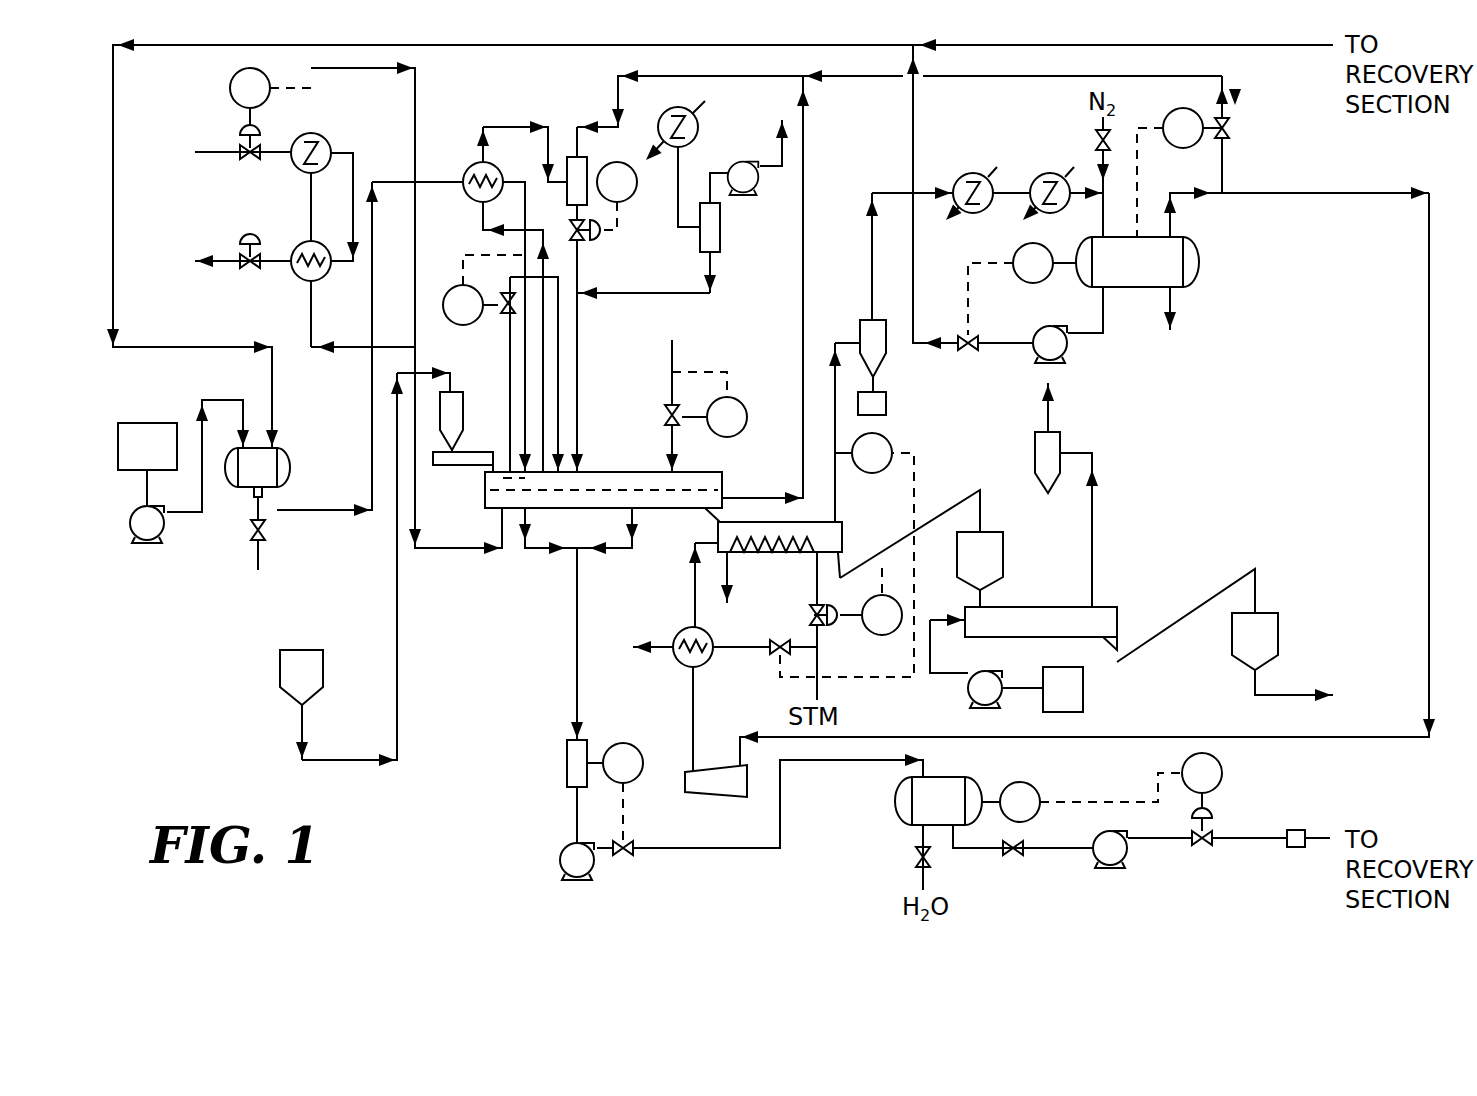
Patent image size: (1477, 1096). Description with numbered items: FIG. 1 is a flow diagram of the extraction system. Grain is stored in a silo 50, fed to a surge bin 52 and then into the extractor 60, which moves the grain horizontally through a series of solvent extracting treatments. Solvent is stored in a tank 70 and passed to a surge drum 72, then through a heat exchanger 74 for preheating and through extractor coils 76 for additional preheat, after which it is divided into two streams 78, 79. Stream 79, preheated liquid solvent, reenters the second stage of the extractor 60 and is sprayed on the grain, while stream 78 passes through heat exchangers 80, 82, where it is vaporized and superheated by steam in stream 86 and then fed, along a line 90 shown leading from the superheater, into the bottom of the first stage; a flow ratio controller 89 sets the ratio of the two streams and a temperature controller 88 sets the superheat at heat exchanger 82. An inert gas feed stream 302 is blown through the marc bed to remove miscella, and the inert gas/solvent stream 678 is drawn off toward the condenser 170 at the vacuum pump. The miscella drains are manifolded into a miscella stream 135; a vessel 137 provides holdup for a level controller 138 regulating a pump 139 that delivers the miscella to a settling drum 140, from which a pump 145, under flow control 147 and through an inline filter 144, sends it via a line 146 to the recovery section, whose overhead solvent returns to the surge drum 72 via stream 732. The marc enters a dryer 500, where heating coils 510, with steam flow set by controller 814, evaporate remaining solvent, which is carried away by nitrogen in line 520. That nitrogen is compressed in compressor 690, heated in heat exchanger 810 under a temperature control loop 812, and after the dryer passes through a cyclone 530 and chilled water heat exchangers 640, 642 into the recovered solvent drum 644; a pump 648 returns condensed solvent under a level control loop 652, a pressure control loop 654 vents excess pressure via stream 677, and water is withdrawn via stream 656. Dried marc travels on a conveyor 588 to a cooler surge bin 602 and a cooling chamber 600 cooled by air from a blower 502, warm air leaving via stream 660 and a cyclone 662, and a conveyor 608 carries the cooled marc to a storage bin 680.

The silo 50 is at (280, 660).
The surge bin 52 is at (464, 412).
The extractor 60 is at (628, 472).
The tank 70 is at (147, 423).
The surge drum 72 is at (291, 467).
The heat exchanger 74 is at (470, 170).
The extractor coils 76 is at (512, 478).
The stream 78 is at (341, 352).
The stream 79 is at (560, 310).
The heat exchanger 80 is at (296, 276).
The heat exchanger 82 is at (296, 167).
The stream 86 is at (212, 152).
The temperature controller 88 is at (229, 88).
The flow ratio controller 89 is at (452, 287).
The vapor line 90 is at (415, 90).
The miscella stream 135 is at (576, 601).
The vessel 137 is at (567, 763).
The level controller 138 is at (622, 743).
The pump 139 is at (560, 859).
The settling drum 140 is at (895, 800).
The inline filter 144 is at (1293, 848).
The pump 145 is at (1095, 862).
The line to recovery section 146 is at (1265, 832).
The flow control 147 is at (1225, 762).
The condenser 170 is at (699, 127).
The feed stream 302 is at (672, 349).
The dryer 500 is at (843, 531).
The blower 502 is at (968, 685).
The heating coils 510 is at (771, 556).
The line 520 is at (835, 340).
The cyclone 530 is at (887, 362).
The conveyor 588 is at (953, 507).
The cooling chamber 600 is at (1058, 607).
The cooler surge bin 602 is at (1003, 533).
The conveyor 608 is at (1195, 609).
The chilled water heat exchanger 640 is at (970, 172).
The chilled water heat exchanger 642 is at (1050, 172).
The recovered solvent drum 644 is at (1200, 262).
The pump 648 is at (1065, 358).
The level control loop 652 is at (1018, 280).
The pressure control loop 654 is at (1168, 148).
The stream 656 is at (1175, 300).
The stream 660 is at (1093, 525).
The cyclone 662 is at (1062, 432).
The stream 677 is at (1228, 105).
The inert gas/solvent stream 678 is at (803, 328).
The storage bin 680 is at (1283, 630).
The compressor 690 is at (738, 800).
The stream 732 is at (1213, 48).
The heat exchanger 810 is at (690, 628).
The temperature control loop 812 is at (893, 437).
The controller 814 is at (856, 633).